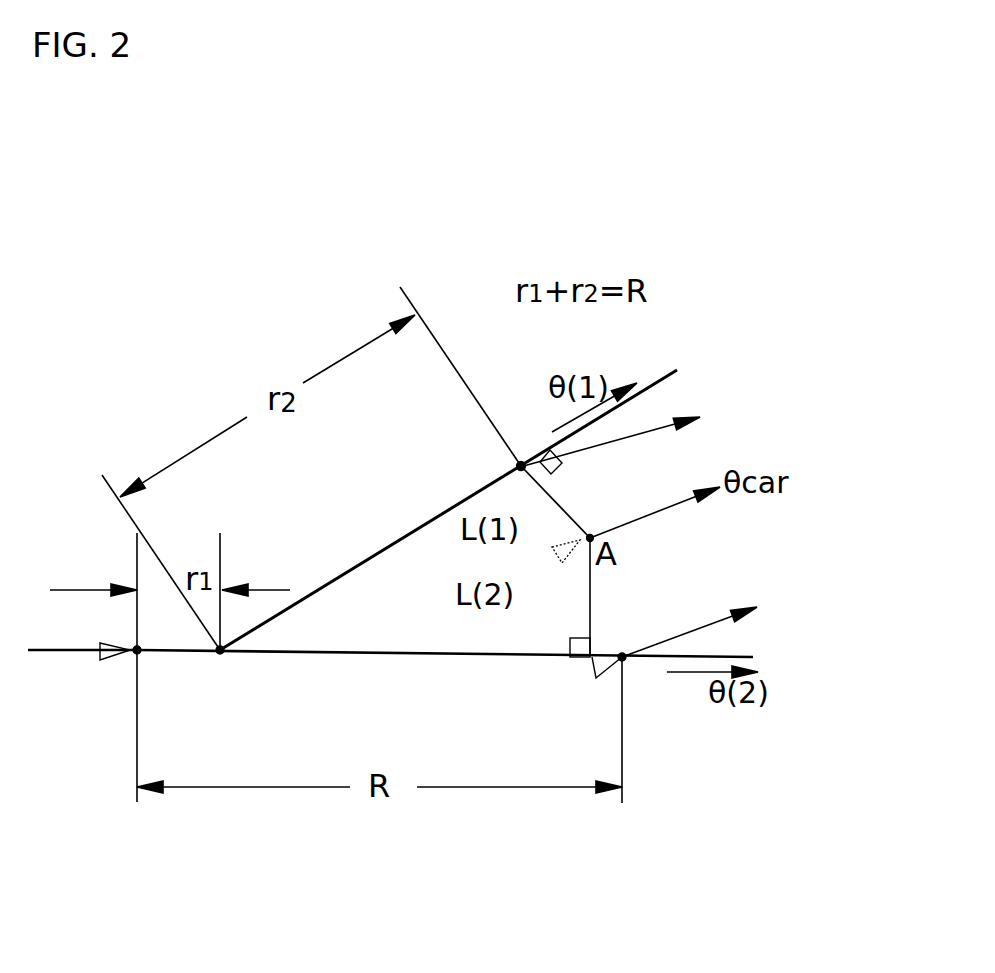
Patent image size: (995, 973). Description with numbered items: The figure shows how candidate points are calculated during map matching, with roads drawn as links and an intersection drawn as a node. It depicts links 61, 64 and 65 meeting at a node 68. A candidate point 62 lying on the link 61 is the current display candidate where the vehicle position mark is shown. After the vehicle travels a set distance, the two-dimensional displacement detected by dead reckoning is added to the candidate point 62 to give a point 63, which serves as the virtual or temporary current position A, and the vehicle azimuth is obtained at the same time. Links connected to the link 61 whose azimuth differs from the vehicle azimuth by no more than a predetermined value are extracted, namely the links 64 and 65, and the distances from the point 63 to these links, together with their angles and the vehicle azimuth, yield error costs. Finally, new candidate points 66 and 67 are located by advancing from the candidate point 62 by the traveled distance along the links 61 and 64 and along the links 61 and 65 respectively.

The link 61 is at (72, 652).
The candidate point 62 is at (137, 648).
The point 63 is at (597, 530).
The link 64 is at (347, 572).
The link 65 is at (363, 656).
The point 66 is at (522, 463).
The point 67 is at (645, 692).
The node 68 is at (220, 653).